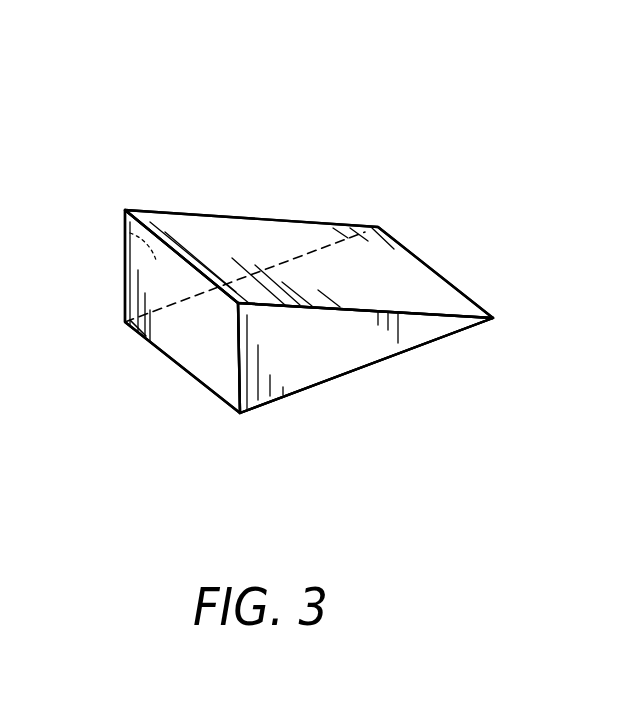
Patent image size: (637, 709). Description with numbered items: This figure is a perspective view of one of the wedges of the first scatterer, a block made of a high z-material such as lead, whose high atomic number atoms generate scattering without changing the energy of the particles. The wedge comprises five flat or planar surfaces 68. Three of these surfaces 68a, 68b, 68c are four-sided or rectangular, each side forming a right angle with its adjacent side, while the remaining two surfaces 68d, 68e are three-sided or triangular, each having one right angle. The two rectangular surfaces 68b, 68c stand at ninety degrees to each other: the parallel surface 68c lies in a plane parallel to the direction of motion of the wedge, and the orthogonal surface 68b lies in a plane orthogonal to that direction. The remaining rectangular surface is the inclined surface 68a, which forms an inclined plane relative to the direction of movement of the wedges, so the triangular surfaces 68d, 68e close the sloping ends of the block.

The planar surfaces 68 is at (184, 150).
The inclined surface 68a is at (402, 277).
The orthogonal surface 68b is at (182, 314).
The parallel surface 68c is at (347, 343).
The triangular shaped surface 68d is at (127, 228).
The triangular shaped surface 68e is at (287, 358).